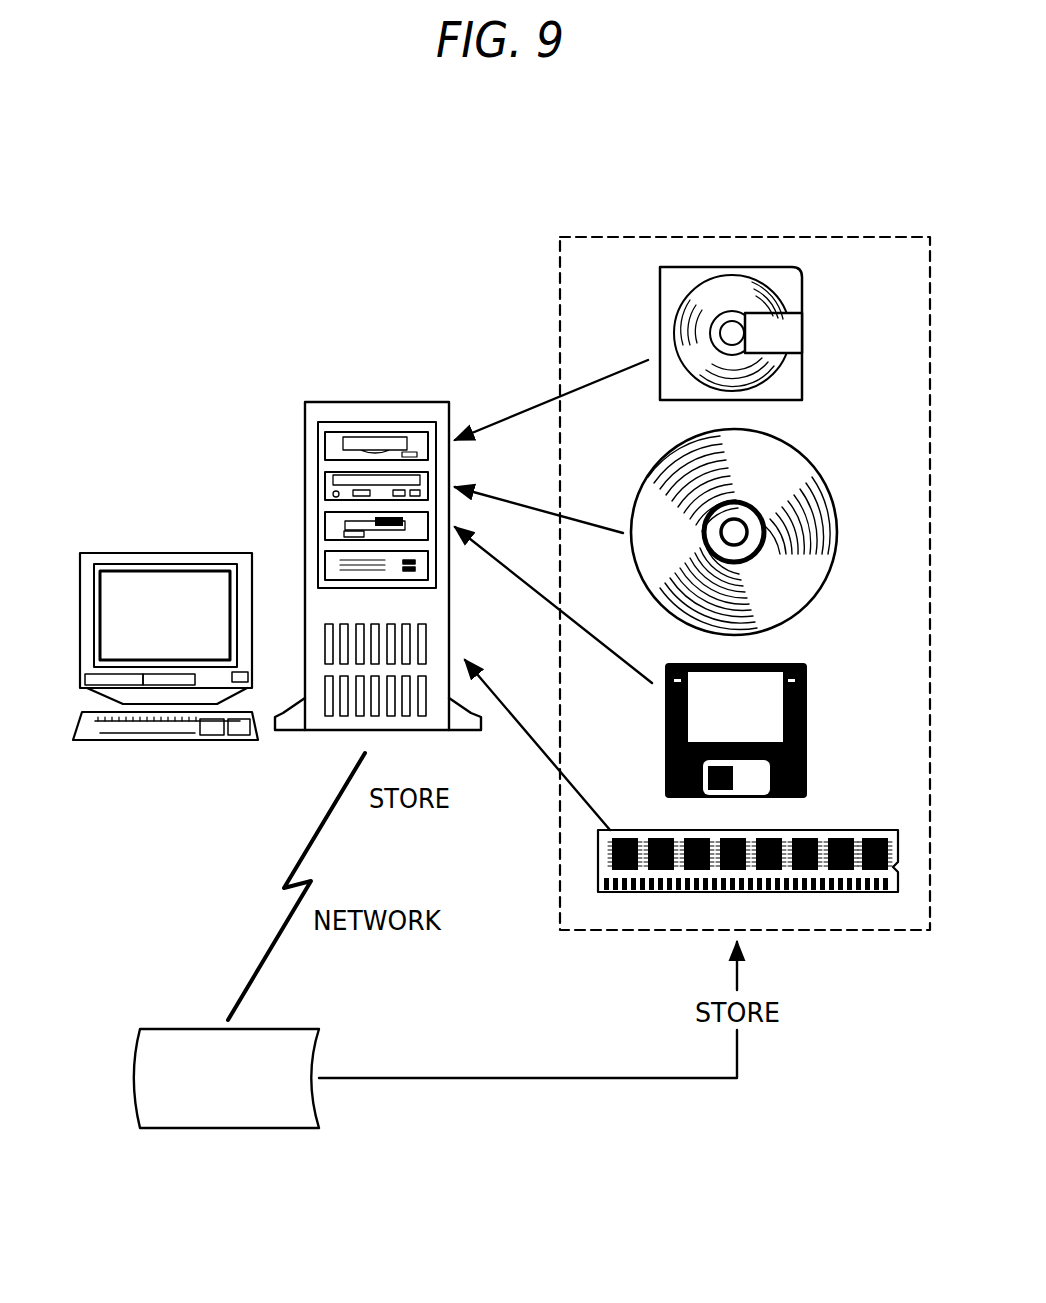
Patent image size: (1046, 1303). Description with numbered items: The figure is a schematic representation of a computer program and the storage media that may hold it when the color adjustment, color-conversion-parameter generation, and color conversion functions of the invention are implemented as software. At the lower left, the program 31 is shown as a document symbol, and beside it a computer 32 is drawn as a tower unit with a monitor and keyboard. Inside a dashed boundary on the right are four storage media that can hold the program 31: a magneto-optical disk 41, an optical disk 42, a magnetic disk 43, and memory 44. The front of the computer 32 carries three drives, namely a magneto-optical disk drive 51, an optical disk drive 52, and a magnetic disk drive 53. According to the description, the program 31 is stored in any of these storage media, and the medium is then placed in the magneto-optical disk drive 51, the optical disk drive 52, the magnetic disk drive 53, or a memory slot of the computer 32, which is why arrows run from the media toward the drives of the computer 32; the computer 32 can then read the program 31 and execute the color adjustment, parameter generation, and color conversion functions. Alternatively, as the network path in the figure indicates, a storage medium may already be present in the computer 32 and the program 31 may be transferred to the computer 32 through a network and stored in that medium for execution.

The program 31 is at (216, 1130).
The computer 32 is at (377, 401).
The magneto-optical disk 41 is at (802, 311).
The optical disk 42 is at (820, 471).
The magnetic disk 43 is at (808, 719).
The memory 44 is at (845, 830).
The magneto-optical disk drive 51 is at (325, 447).
The optical disk drive 52 is at (325, 487).
The magnetic disk drive 53 is at (325, 528).